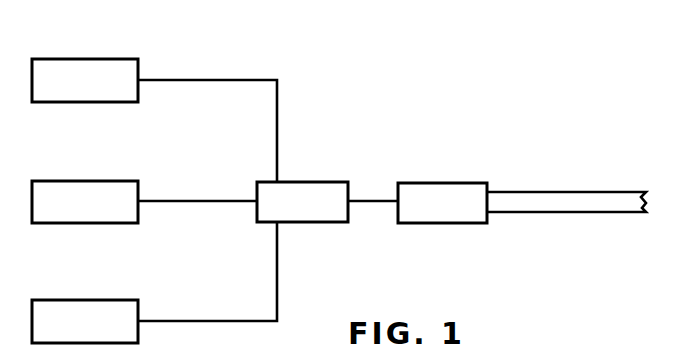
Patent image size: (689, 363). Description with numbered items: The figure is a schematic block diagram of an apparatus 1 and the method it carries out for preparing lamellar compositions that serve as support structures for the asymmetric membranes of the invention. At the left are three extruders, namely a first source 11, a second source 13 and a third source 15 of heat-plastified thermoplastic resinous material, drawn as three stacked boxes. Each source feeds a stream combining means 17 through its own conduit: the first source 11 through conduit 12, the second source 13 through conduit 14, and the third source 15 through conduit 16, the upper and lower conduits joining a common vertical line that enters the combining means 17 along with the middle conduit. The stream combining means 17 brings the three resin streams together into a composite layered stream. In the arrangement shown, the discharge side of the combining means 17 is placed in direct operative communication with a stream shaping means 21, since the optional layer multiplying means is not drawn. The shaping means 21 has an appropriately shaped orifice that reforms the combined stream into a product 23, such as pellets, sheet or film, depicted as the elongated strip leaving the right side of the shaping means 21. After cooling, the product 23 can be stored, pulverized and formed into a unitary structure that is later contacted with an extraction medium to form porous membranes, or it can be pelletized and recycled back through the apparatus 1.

The apparatus 1 is at (356, 58).
The first source of heat-plastified thermoplastic resinous material 11 is at (102, 57).
The conduit 12 is at (222, 78).
The second source of heat-plastified thermoplastic resinous material 13 is at (100, 179).
The conduit 14 is at (228, 198).
The third source of heat-plastified thermoplastic resinous material 15 is at (102, 298).
The conduit 16 is at (233, 318).
The stream combining means 17 is at (327, 180).
The stream shaping means 21 is at (456, 181).
The product 23 is at (622, 190).